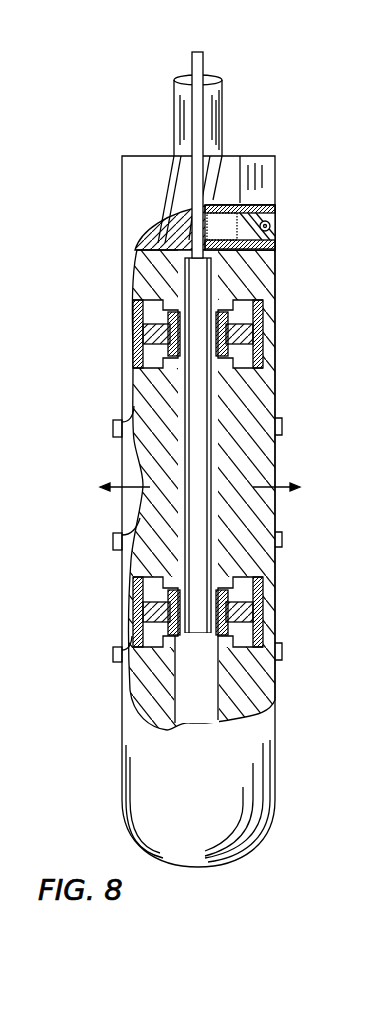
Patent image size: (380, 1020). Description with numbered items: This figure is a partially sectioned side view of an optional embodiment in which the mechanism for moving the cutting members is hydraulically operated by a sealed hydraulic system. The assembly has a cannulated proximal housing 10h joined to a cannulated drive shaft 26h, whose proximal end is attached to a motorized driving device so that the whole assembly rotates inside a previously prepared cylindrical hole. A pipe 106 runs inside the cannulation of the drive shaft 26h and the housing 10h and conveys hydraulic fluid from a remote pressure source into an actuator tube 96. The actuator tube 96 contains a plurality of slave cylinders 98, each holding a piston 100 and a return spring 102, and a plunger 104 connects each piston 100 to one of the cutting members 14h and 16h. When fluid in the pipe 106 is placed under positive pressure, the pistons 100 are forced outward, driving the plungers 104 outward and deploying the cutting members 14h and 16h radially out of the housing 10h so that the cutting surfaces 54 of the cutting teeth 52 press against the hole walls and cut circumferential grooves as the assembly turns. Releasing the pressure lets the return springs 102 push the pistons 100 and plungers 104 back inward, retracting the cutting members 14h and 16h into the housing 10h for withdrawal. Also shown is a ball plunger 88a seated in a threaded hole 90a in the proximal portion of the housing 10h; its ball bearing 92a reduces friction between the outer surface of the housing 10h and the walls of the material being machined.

The proximal housing 10h is at (265, 198).
The cutting member 14h is at (253, 505).
The cutting member 16h is at (165, 552).
The drive shaft 26h is at (210, 147).
The cutting teeth 52 is at (113, 650).
The cutting surfaces 54 is at (282, 650).
The ball plunger 88a is at (270, 250).
The threaded hole 90a is at (240, 270).
The ball bearing 92a is at (271, 226).
The actuator tube 96 is at (210, 473).
The slave cylinder 98 is at (248, 390).
The piston 100 is at (241, 336).
The return spring 102 is at (260, 345).
The plunger 104 is at (265, 355).
The pipe 106 is at (200, 62).